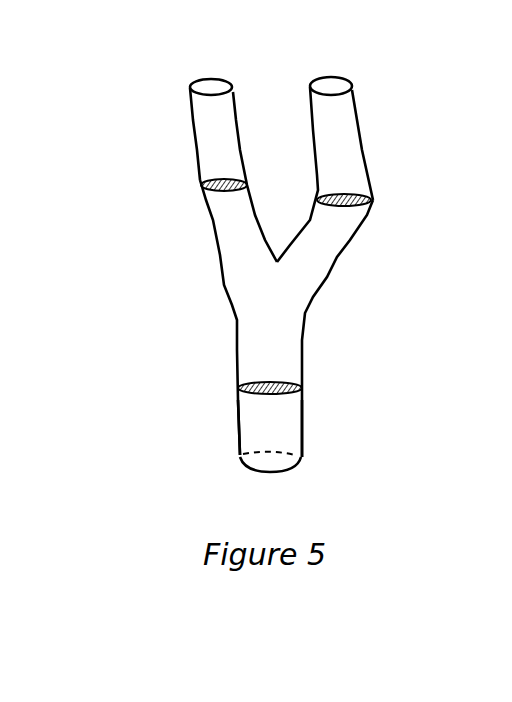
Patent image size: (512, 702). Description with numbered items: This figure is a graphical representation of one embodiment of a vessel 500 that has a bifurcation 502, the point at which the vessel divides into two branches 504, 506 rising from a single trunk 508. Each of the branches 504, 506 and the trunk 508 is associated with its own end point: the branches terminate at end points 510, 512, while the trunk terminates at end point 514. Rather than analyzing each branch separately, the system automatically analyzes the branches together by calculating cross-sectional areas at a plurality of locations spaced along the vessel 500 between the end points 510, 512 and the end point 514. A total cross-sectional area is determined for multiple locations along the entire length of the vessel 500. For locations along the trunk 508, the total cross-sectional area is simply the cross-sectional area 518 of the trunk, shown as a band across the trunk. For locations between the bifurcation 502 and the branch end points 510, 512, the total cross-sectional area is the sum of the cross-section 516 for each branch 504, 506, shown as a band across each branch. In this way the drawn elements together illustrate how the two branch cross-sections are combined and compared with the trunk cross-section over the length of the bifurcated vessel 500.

The vessel 500 is at (428, 302).
The bifurcation 502 is at (220, 285).
The branch 504 is at (370, 153).
The branch 506 is at (193, 135).
The trunk 508 is at (307, 433).
The end point 510 is at (352, 83).
The end point 512 is at (190, 87).
The end point 514 is at (303, 463).
The cross-section 516 is at (200, 183).
The cross-sectional area 518 is at (303, 385).